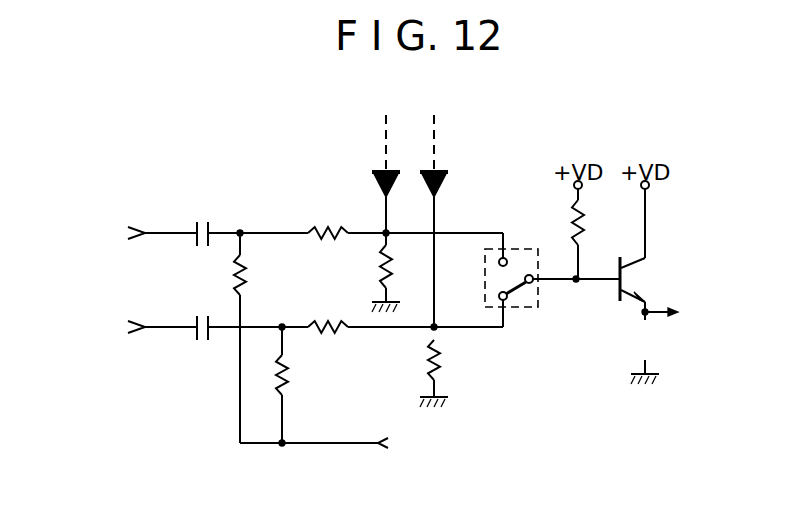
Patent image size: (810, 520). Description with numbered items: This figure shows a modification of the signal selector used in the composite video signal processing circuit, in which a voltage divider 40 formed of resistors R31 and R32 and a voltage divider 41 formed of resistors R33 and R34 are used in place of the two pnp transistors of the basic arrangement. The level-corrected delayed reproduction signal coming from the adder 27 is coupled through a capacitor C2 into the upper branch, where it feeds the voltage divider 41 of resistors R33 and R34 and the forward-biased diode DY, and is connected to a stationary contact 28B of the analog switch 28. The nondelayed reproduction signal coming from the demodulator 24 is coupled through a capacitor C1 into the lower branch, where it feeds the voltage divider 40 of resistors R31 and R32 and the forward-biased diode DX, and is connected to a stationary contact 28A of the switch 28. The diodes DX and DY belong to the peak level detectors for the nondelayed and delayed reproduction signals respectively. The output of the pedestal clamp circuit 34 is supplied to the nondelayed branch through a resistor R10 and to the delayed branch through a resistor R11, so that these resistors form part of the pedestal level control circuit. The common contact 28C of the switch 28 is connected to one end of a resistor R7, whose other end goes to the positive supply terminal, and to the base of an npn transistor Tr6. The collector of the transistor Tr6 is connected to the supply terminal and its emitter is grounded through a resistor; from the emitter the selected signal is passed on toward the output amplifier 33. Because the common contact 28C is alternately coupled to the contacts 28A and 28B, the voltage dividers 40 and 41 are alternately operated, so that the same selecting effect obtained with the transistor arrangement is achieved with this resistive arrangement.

The capacitor C2 is at (205, 218).
The capacitor C1 is at (205, 314).
The resistor R33 is at (330, 222).
The resistor R31 is at (324, 322).
The resistor R11 is at (246, 276).
The resistor R10 is at (290, 381).
The resistor R34 is at (382, 282).
The resistor R32 is at (442, 360).
The resistor R7 is at (586, 230).
The diode DY is at (373, 168).
The diode DX is at (442, 162).
The voltage divider 41 is at (394, 250).
The voltage divider 40 is at (409, 344).
The analog switch 28 is at (514, 284).
The stationary contact 28A is at (500, 308).
The stationary contact 28B is at (501, 256).
The common contact 28C is at (538, 292).
The npn transistor Tr6 is at (648, 282).
The adder 27 is at (98, 242).
The demodulator 24 is at (127, 355).
The output amplifier 33 is at (725, 326).
The pedestal clamp circuit 34 is at (458, 459).